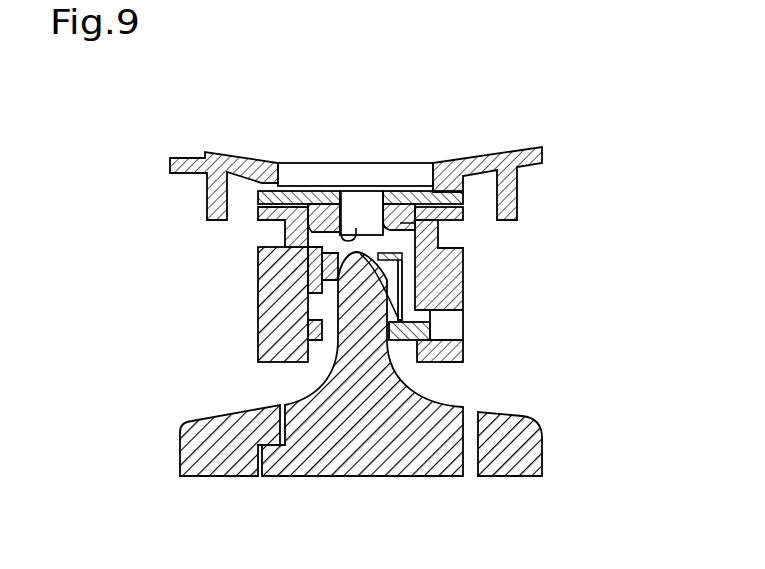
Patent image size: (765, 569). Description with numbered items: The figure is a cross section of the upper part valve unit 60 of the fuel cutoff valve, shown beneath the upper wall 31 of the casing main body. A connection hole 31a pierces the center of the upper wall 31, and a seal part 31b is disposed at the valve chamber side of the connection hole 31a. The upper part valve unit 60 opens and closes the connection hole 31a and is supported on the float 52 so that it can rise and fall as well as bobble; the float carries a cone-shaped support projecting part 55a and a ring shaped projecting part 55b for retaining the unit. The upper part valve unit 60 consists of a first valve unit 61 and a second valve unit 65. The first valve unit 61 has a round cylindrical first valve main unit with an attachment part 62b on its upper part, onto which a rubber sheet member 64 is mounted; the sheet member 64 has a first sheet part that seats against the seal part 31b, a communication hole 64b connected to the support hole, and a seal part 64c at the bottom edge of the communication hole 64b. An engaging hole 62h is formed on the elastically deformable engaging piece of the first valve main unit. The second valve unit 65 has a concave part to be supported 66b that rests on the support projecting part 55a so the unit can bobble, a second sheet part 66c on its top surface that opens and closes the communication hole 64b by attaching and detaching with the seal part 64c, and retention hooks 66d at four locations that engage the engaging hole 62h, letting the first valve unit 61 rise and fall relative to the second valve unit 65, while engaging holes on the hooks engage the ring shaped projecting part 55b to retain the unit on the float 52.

The upper wall 31 is at (253, 160).
The connection hole 31a is at (318, 165).
The seal part 31b is at (432, 190).
The float 52 is at (537, 450).
The support projecting part 55a is at (450, 340).
The ring shaped projecting part 55b is at (320, 318).
The upper part valve unit 60 is at (561, 246).
The first valve unit 61 is at (462, 212).
The attachment part 62b is at (285, 223).
The engaging hole 62h is at (453, 333).
The sheet member 64 is at (455, 192).
The communication hole 64b is at (440, 236).
The seal part 64c is at (357, 228).
The second valve unit 65 is at (400, 272).
The part to be supported 66b is at (420, 300).
The second sheet part 66c is at (330, 272).
The retention hooks 66d is at (440, 362).